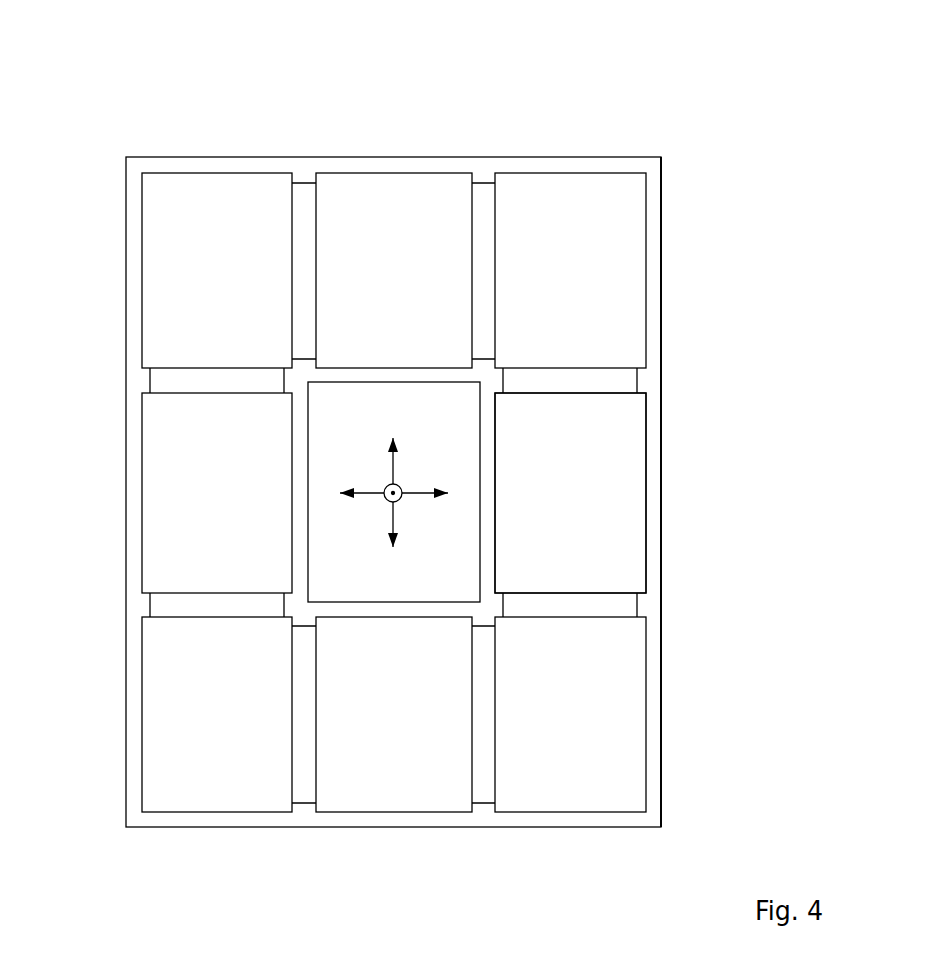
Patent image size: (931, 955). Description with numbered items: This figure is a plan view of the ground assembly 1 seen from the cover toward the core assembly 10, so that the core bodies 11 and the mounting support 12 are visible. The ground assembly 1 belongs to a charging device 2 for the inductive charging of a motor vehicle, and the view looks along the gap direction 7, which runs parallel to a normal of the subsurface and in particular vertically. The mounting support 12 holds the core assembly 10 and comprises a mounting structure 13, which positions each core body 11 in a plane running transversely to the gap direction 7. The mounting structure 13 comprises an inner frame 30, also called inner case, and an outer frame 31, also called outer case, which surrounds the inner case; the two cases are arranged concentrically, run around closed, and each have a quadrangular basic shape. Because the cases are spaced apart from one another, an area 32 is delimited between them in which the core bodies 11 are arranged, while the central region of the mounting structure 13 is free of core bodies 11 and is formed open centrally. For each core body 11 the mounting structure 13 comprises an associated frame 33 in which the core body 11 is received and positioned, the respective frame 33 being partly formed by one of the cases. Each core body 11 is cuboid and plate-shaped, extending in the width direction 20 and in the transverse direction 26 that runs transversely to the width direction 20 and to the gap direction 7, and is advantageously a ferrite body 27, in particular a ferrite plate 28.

The ground assembly 1 is at (153, 117).
The charging device 2 is at (752, 139).
The gap direction 7 is at (386, 502).
The core assembly 10 is at (658, 134).
The core body 11 is at (394, 492).
The mounting support 12 is at (698, 202).
The mounting structure 13 is at (663, 342).
The width direction 20 is at (393, 468).
The transverse direction 26 is at (420, 497).
The ferrite body 27 is at (394, 492).
The ferrite plate 28 is at (267, 279).
The inner frame 30 is at (313, 420).
The outer frame 31 is at (663, 385).
The area 32 is at (609, 418).
The frame 33 is at (392, 156).